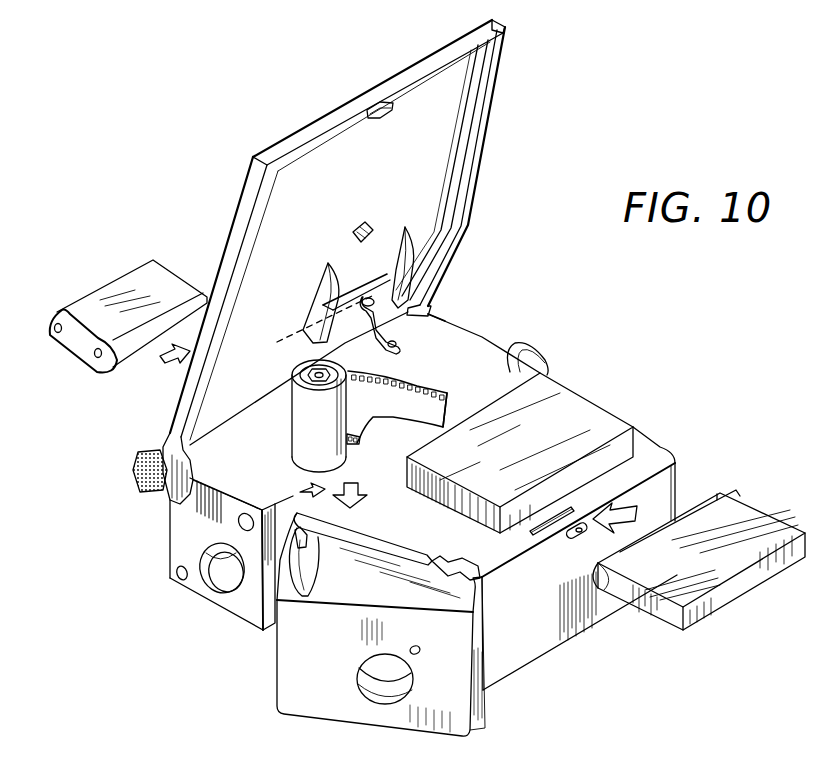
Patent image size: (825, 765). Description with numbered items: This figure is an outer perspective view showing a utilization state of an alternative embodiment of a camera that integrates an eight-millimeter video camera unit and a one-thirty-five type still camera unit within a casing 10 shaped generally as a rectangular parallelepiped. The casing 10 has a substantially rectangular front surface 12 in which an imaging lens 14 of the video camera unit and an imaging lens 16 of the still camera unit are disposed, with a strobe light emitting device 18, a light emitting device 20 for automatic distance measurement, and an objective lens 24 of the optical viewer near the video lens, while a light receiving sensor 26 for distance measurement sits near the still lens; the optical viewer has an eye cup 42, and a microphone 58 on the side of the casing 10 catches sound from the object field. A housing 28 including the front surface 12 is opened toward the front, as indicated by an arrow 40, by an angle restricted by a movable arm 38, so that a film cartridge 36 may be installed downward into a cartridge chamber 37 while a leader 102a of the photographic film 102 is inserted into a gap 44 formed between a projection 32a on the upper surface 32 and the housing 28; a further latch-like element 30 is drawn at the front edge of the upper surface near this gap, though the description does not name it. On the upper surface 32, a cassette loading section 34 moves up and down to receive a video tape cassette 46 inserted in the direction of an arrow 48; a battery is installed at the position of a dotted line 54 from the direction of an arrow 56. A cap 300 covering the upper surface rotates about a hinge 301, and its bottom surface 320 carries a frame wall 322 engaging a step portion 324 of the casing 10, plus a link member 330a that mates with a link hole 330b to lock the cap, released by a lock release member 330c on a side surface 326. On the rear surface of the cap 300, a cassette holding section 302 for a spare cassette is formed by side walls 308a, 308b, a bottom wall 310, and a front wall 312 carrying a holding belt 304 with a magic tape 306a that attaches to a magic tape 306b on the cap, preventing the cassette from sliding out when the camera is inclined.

The casing 10 is at (660, 448).
The front surface 12 is at (182, 552).
The imaging lens 14 is at (218, 594).
The imaging lens 16 is at (358, 681).
The strobe light emitting device 18 is at (195, 510).
The light emitting device 20 is at (178, 582).
The objective lens 24 is at (245, 512).
The light receiving sensor 26 is at (421, 651).
The housing 28 is at (293, 679).
The latch 30 is at (470, 566).
The upper surface 32 is at (430, 318).
The projection 32a is at (292, 511).
The cassette loading section 34 is at (599, 413).
The film cartridge 36 is at (292, 437).
The cartridge chamber 37 is at (310, 598).
The movable arm 38 is at (258, 602).
The arrow 40 is at (364, 493).
The eye cup 42 is at (522, 347).
The gap 44 is at (396, 543).
The video tape cassette 46 is at (650, 617).
The arrow 48 is at (628, 517).
The dotted line 54 is at (153, 262).
The arrow 56 is at (162, 356).
The microphone 58 is at (140, 454).
The photographic film 102 is at (350, 370).
The leader 102a is at (446, 398).
The cap 300 is at (318, 112).
The hinge 301 is at (166, 496).
The cassette holding section 302 is at (338, 257).
The holding belt 304 is at (432, 324).
The magic tape 306a is at (402, 345).
The magic tape 306b is at (366, 222).
The side wall 308a is at (318, 302).
The side wall 308b is at (413, 240).
The bottom wall 310 is at (302, 324).
The front wall 312 is at (393, 277).
The bottom surface 320 is at (437, 150).
The frame wall 322 is at (505, 32).
The step portion 324 is at (662, 471).
The side surface 326 is at (545, 638).
The link member 330a is at (383, 119).
The link hole 330b is at (533, 535).
The lock release member 330c is at (578, 545).